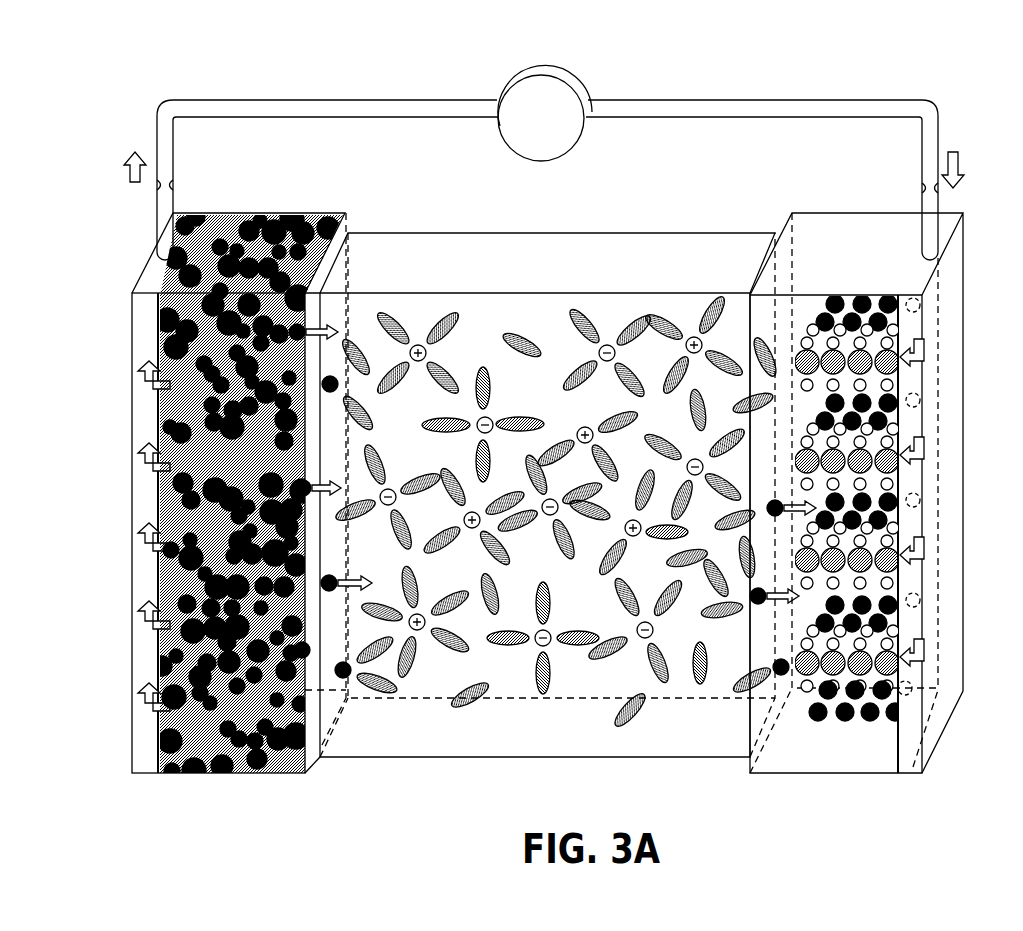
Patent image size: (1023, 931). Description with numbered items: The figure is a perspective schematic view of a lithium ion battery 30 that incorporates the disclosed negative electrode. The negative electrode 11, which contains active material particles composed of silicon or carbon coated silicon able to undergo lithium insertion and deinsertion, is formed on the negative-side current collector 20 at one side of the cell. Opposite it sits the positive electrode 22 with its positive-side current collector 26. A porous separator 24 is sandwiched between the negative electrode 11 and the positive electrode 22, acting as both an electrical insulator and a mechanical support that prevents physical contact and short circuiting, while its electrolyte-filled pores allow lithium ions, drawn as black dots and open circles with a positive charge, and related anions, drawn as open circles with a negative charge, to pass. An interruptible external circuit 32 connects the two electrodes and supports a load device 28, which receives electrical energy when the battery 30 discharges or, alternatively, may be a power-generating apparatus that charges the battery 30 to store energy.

The lithium ion battery 30 is at (953, 118).
The external circuit 32 is at (340, 98).
The load device 28 is at (547, 58).
The negative electrode 11 is at (285, 203).
The negative-side current collector 20 is at (145, 733).
The porous separator 24 is at (615, 267).
The positive electrode 22 is at (836, 204).
The positive-side current collector 26 is at (915, 755).